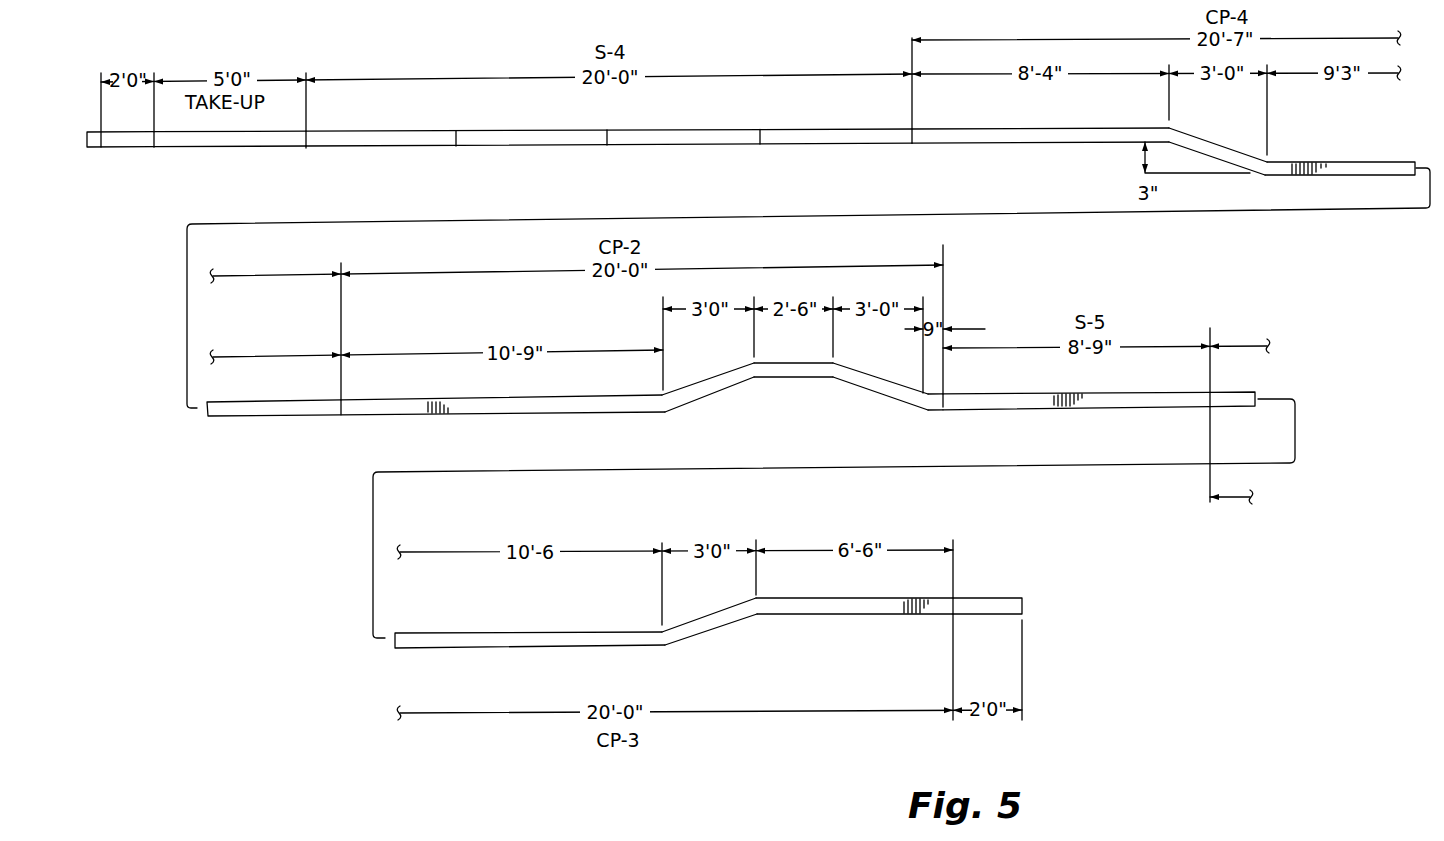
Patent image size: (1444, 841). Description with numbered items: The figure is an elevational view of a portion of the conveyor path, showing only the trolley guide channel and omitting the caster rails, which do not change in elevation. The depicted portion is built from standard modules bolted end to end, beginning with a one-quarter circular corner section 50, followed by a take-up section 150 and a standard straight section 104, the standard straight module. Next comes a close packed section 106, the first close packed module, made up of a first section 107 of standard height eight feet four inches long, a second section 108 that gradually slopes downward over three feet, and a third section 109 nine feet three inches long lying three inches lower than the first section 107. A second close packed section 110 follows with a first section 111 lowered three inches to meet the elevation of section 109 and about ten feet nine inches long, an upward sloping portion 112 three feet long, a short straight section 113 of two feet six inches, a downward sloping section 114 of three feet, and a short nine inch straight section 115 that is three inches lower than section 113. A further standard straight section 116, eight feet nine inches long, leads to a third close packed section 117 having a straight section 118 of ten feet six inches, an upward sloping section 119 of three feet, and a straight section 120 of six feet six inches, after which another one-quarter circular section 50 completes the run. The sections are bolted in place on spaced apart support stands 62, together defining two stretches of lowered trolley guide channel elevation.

The one-quarter circular corner section 50 is at (121, 150).
The take-up section 150 is at (270, 150).
The support stands 62 is at (456, 146).
The standard straight section 104 is at (653, 126).
The close packed section 106 is at (1226, 140).
The first section 107 is at (1082, 143).
The second section 108 is at (1237, 160).
The third section 109 is at (1360, 162).
The second close packed section 110 is at (671, 385).
The first section 111 is at (512, 417).
The upward sloping portion 112 is at (721, 386).
The short straight section 113 is at (803, 379).
The downward sloping section 114 is at (888, 395).
The short straight section 115 is at (935, 411).
The standard straight section 116 is at (1110, 412).
The third close packed section 117 is at (706, 610).
The straight section 118 is at (1243, 400).
The upward sloping section 119 is at (722, 621).
The straight section 120 is at (877, 615).